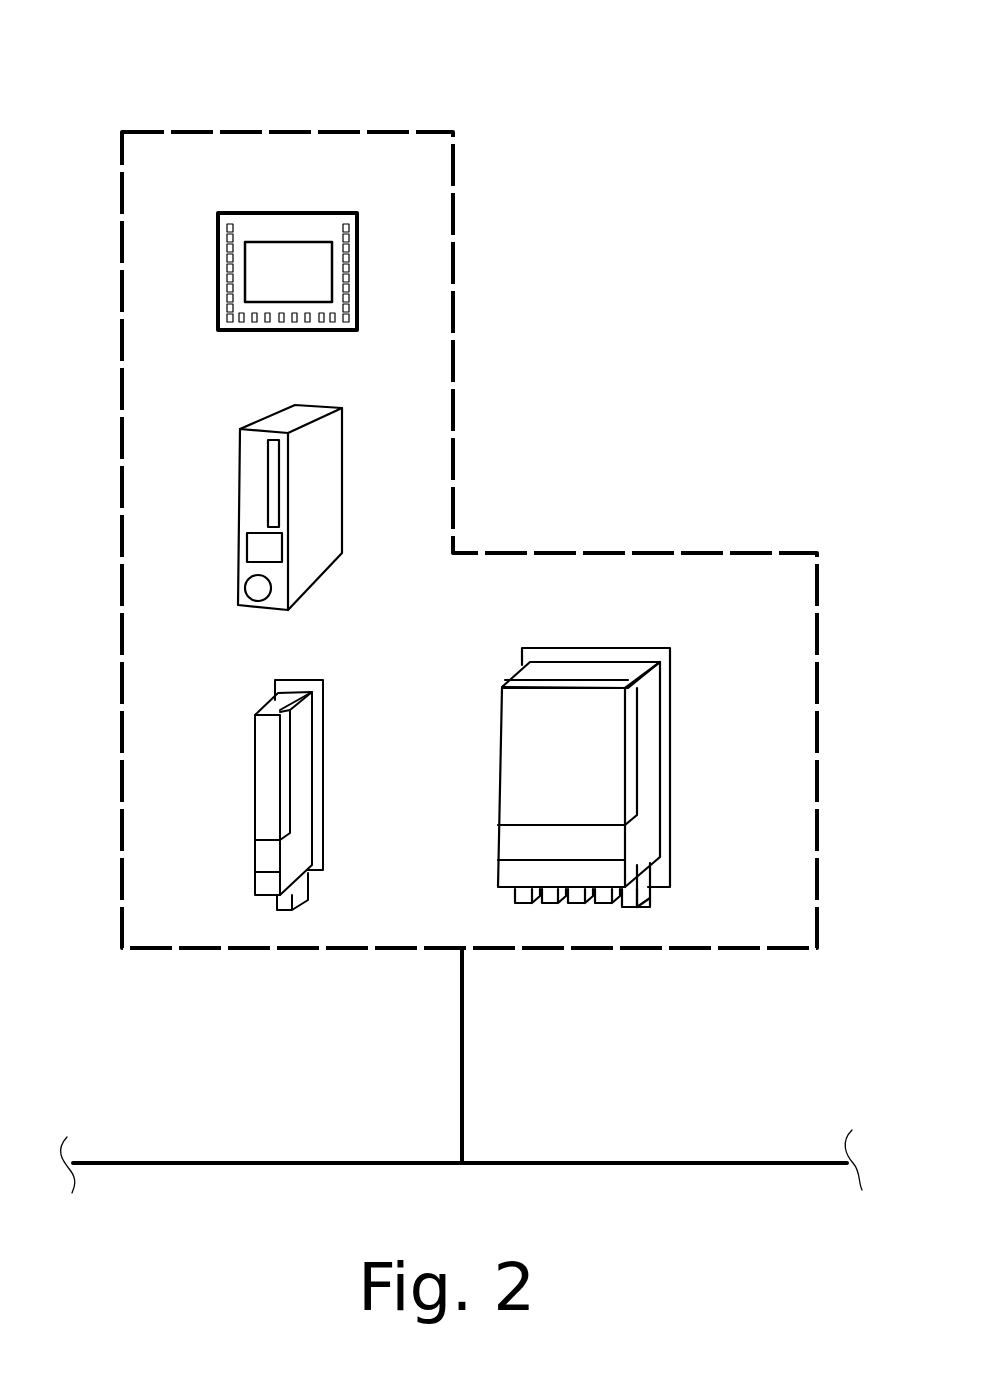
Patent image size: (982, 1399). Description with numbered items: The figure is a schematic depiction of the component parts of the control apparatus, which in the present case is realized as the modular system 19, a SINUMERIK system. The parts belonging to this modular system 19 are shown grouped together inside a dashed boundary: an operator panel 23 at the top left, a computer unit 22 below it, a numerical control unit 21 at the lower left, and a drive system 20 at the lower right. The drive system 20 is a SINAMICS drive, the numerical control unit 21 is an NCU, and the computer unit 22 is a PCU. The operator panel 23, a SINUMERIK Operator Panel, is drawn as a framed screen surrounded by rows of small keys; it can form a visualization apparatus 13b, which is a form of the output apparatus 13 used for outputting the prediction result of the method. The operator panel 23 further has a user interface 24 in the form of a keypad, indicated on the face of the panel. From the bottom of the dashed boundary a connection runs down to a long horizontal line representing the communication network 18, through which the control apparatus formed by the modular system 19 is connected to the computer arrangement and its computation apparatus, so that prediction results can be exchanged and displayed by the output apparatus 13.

The output apparatus 13 is at (303, 227).
The visualization apparatus 13b is at (380, 271).
The operator panel 23 is at (380, 271).
The user interface 24 is at (327, 278).
The computer unit 22 is at (322, 505).
The numerical control unit 21 is at (293, 860).
The drive system 20 is at (613, 740).
The modular system 19 is at (700, 948).
The communication network 18 is at (597, 1163).